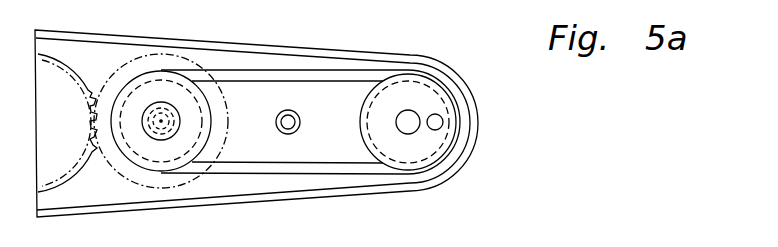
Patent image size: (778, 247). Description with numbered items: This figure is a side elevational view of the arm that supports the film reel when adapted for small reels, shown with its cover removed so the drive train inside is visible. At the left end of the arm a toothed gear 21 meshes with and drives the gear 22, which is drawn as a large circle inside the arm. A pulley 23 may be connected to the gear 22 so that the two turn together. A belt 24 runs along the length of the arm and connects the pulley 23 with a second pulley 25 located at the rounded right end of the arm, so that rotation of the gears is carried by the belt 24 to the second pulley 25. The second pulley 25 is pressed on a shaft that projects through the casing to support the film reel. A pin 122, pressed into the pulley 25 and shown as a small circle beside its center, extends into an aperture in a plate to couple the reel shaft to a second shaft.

The gear 21 is at (72, 76).
The gear 22 is at (119, 70).
The pulley 23 is at (210, 113).
The belt 24 is at (293, 170).
The second pulley 25 is at (428, 82).
The pin 122 is at (443, 121).